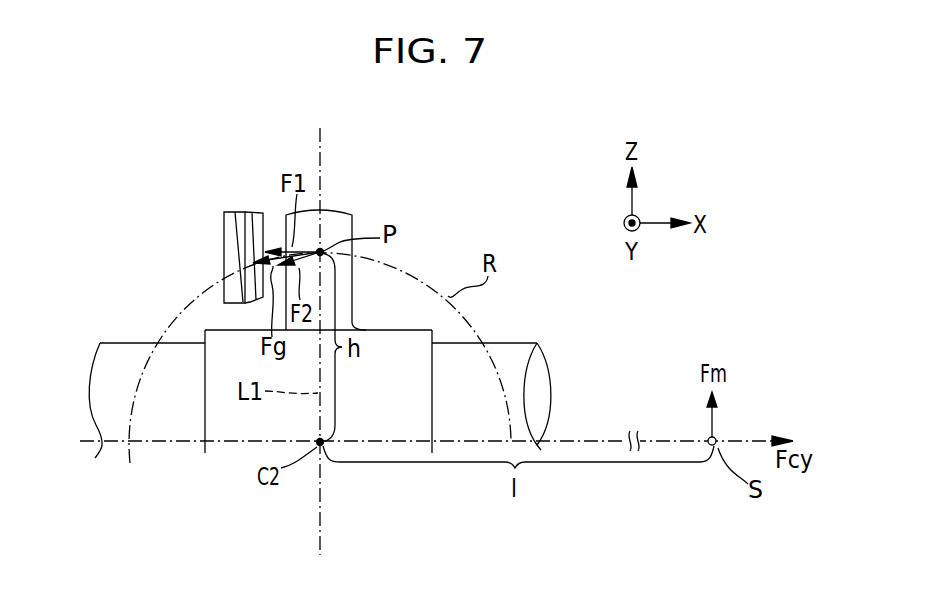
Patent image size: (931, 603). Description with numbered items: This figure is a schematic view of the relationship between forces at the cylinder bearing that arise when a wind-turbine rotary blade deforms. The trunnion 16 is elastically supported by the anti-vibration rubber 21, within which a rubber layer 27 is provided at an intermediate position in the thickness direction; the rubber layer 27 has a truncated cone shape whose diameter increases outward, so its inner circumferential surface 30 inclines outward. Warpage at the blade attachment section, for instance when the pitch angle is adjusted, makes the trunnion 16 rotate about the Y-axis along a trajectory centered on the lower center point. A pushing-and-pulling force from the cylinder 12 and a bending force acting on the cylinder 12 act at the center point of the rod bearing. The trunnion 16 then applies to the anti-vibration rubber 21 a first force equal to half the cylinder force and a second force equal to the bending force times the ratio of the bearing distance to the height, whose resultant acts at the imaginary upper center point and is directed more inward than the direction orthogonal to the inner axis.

The cylinder 12 is at (117, 343).
The trunnion 16 is at (335, 210).
The anti-vibration rubber 21 is at (228, 176).
The rubber layer 27 is at (243, 233).
The inner circumferential surface 30 is at (254, 252).